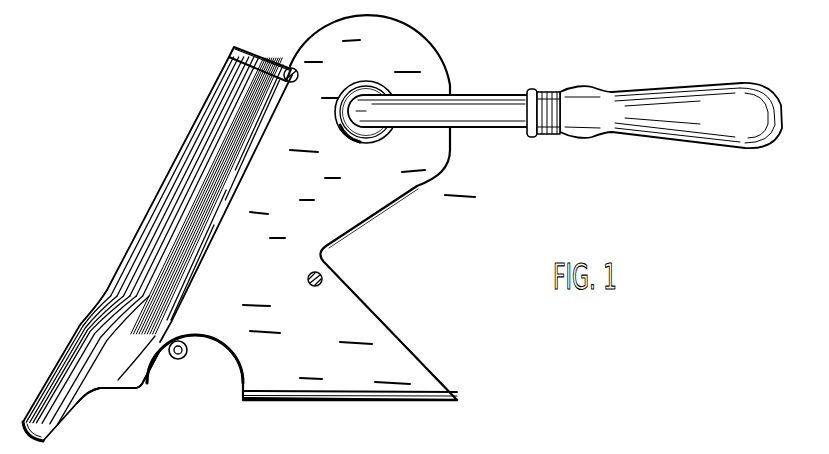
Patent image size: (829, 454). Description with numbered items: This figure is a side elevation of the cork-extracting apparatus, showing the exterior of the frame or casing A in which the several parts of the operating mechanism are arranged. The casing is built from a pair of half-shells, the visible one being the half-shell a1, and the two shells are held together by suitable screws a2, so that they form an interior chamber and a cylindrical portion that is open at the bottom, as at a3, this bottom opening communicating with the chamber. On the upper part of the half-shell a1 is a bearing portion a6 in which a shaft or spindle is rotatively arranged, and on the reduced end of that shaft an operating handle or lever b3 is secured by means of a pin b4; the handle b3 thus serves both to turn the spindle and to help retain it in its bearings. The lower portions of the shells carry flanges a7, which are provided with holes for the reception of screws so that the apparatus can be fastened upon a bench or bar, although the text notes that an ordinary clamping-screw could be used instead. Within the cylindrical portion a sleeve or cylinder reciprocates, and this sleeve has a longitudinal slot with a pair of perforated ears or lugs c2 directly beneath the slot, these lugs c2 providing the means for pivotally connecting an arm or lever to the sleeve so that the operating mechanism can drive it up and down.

The frame or casing A is at (302, 207).
The half-shell a1 is at (359, 212).
The screws a2 is at (299, 77).
The bottom opening of cylindrical portion a3 is at (118, 382).
The bearing portion a6 is at (336, 114).
The flanges a7 is at (356, 391).
The operating handle or lever b3 is at (514, 92).
The pin b4 is at (372, 92).
The perforated ears or lugs c2 is at (178, 359).